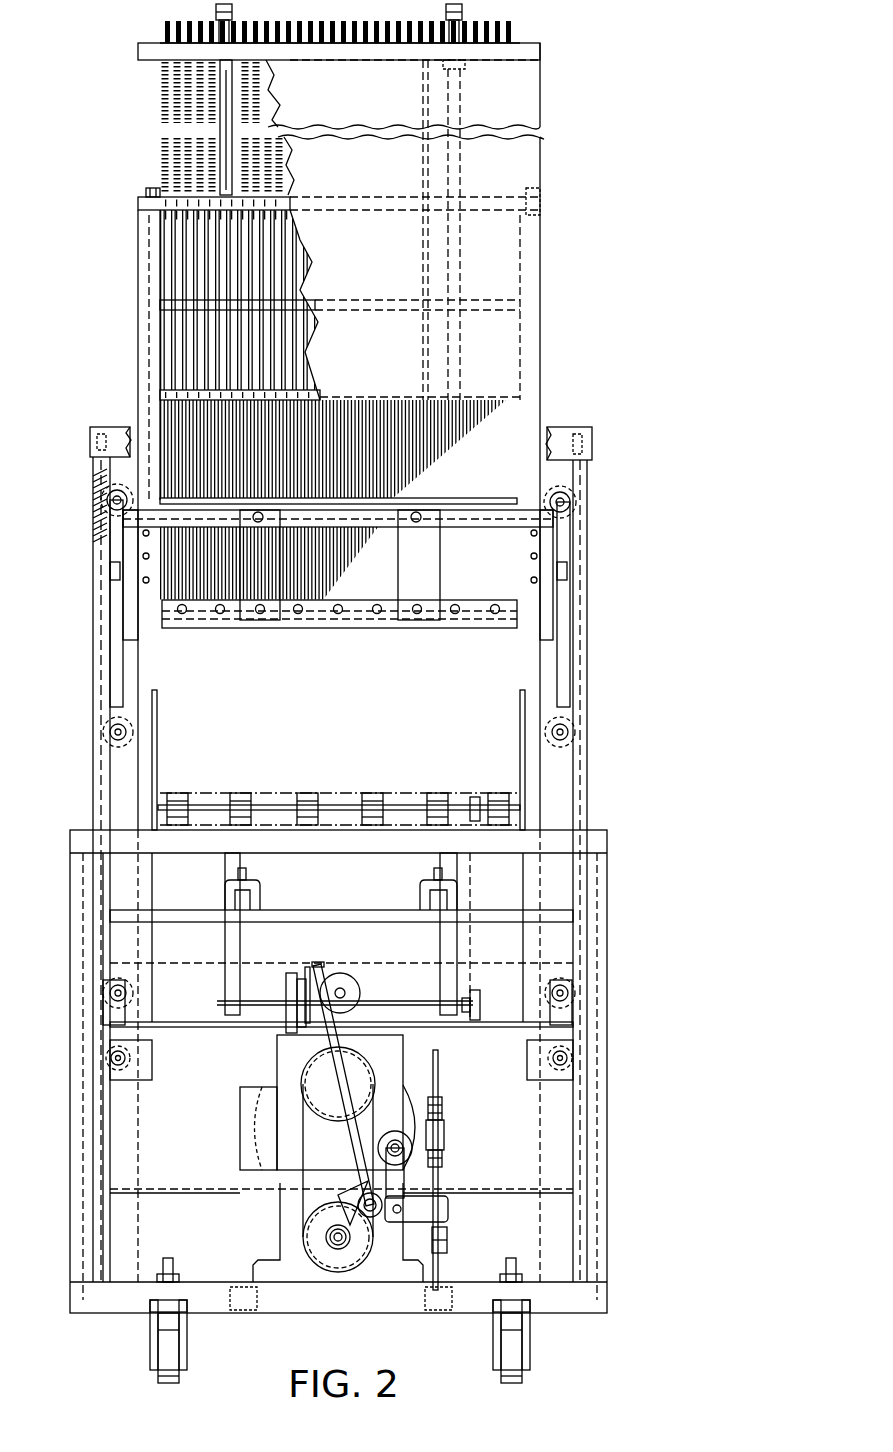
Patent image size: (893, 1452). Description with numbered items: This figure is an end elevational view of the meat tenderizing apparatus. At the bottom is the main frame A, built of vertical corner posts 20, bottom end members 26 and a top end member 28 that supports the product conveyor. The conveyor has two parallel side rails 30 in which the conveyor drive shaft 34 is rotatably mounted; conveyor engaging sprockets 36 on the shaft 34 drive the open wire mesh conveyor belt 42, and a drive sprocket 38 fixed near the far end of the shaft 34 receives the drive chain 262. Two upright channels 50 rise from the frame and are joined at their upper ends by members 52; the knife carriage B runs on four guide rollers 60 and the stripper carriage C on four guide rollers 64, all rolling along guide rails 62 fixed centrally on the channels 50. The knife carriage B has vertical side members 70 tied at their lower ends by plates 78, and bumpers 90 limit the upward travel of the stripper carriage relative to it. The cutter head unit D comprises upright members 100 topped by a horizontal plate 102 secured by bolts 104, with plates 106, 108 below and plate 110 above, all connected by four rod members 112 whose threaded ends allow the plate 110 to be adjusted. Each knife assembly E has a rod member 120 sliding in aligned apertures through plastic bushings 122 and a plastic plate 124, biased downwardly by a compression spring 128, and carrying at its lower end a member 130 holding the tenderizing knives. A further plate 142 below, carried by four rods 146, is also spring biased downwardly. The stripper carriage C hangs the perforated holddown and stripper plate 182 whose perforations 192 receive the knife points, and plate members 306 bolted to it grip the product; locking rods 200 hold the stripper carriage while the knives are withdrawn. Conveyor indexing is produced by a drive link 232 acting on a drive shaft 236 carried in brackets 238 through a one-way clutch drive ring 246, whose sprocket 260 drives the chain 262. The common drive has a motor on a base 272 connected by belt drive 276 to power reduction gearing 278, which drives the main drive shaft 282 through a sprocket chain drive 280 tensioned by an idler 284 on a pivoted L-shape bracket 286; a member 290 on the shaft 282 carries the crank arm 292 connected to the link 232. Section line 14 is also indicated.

The vertical corner post 20 is at (70, 1122).
The bottom end member 26 is at (298, 1314).
The top end member 28 is at (278, 856).
The side rail 30 is at (154, 790).
The conveyor drive shaft 34 is at (416, 803).
The conveyor engaging sprocket 36 is at (236, 797).
The drive sprocket 38 is at (472, 797).
The conveyor belt 42 is at (351, 797).
The upright channel 50 is at (92, 680).
The connecting member 52 is at (572, 427).
The guide roller 60 is at (100, 492).
The guide rail 62 is at (96, 532).
The guide roller 64 is at (133, 732).
The side member 70 is at (127, 628).
The connecting plate 78 is at (182, 1027).
The bumper 90 is at (115, 575).
The upright member 100 is at (138, 305).
The horizontal plate 102 is at (138, 208).
The bolt 104 is at (146, 193).
The horizontal plate 106 is at (388, 300).
The horizontal plate 108 is at (388, 397).
The horizontal plate 110 is at (138, 48).
The rod member 112 is at (215, 15).
The rod member 120 is at (164, 258).
The plastic bushing 122 is at (508, 44).
The plastic plate 124 is at (158, 192).
The compression spring 128 is at (165, 96).
The knife holding member 130 is at (160, 395).
The horizontal plate 142 is at (496, 497).
The rod 146 is at (423, 247).
The stripper plate 182 is at (424, 627).
The perforation 192 is at (318, 625).
The locking rod 200 is at (400, 1036).
The drive link 232 is at (358, 1084).
The drive shaft 236 is at (269, 1000).
The bracket 238 is at (225, 880).
The clutch drive ring 246 is at (298, 976).
The drive sprocket 260 is at (490, 998).
The drive chain 262 is at (498, 896).
The base 272 is at (400, 1287).
The belt drive 276 is at (442, 1120).
The power reduction gearing 278 is at (395, 1070).
The sprocket chain drive 280 is at (338, 1160).
The main drive shaft 282 is at (342, 1252).
The idler 284 is at (442, 1147).
The L-shape bracket 286 is at (442, 1212).
The crank member 290 is at (330, 1252).
The crank arm 292 is at (442, 1243).
The plate member 306 is at (274, 625).
The section line 14 is at (202, 700).
The main frame A is at (616, 1040).
The knife carriage B is at (504, 686).
The stripper carriage C is at (278, 641).
The cutter head unit D is at (553, 279).
The knife assembly E is at (120, 124).